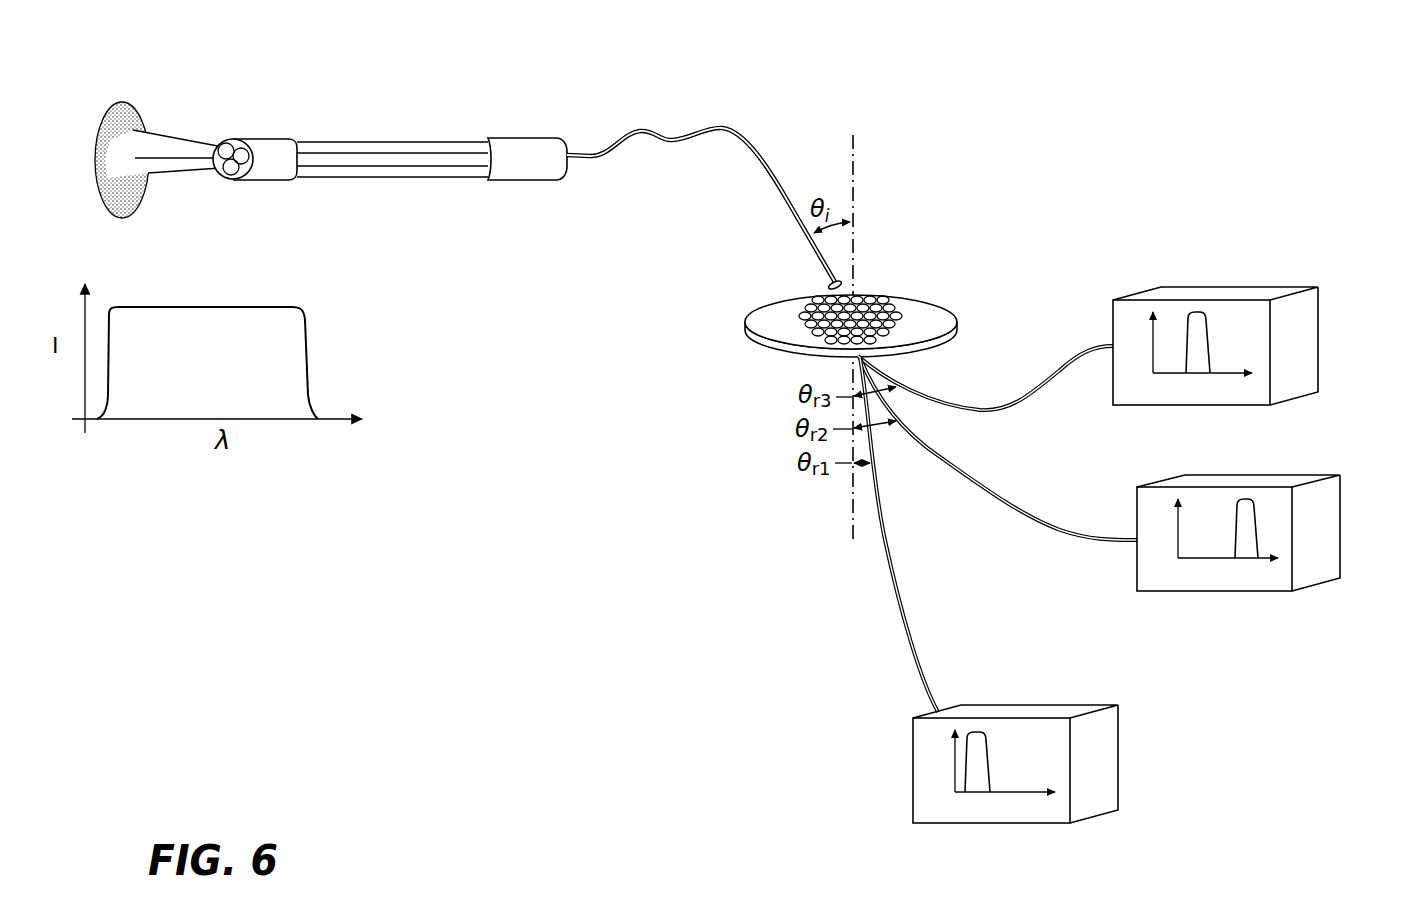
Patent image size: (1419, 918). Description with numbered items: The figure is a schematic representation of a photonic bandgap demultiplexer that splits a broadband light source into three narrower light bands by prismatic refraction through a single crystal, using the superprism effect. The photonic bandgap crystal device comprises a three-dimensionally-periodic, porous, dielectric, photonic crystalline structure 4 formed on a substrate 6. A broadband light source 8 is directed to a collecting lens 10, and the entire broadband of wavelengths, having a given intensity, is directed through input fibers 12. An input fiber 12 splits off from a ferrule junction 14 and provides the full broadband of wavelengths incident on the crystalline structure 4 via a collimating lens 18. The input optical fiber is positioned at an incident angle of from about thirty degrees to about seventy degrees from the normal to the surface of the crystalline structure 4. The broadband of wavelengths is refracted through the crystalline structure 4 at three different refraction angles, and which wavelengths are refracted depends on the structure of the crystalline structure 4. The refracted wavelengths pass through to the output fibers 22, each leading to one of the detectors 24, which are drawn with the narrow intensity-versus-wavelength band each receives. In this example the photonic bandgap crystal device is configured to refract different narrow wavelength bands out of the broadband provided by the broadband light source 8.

The crystalline structure 4 is at (807, 327).
The substrate 6 is at (933, 313).
The broadband light source 8 is at (183, 138).
The collecting lens 10 is at (263, 172).
The input fibers 12 is at (413, 172).
The ferrule junction 14 is at (547, 180).
The collimating lens 18 is at (842, 268).
The output fibers 22 is at (1018, 400).
The detectors 24 is at (1318, 335).